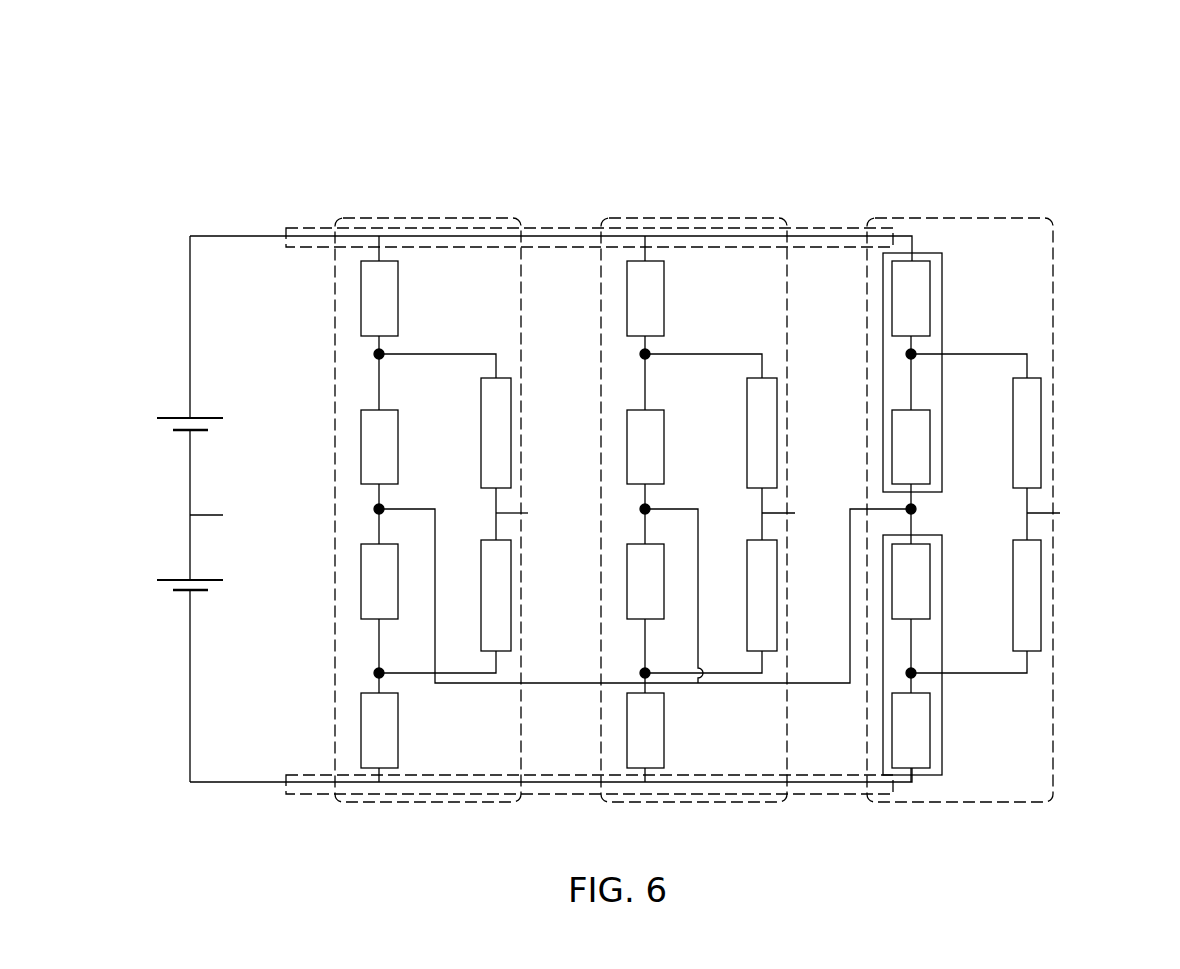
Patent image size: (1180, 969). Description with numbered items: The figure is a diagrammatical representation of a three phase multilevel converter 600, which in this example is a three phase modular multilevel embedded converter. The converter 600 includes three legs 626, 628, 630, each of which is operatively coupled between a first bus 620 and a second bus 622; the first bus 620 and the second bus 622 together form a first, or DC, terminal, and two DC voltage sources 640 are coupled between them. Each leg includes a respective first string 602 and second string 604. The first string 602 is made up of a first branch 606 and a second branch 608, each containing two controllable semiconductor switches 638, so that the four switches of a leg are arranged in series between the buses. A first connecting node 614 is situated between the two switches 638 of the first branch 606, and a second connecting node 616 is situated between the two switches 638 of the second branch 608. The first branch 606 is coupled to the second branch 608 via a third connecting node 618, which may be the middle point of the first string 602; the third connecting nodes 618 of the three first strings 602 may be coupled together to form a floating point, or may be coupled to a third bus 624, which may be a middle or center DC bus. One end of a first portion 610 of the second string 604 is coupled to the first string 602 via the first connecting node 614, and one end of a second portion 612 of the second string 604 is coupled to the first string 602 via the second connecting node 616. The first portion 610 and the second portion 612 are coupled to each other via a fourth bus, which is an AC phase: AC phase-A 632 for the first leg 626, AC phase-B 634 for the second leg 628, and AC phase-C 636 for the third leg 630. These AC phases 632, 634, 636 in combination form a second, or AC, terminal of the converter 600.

The three phase multilevel converter 600 is at (1028, 76).
The first string 602 is at (645, 254).
The second string 604 is at (680, 354).
The first branch 606 is at (942, 291).
The second branch 608 is at (942, 735).
The first portion 610 is at (1043, 432).
The second portion 612 is at (1043, 594).
The first connecting node 614 is at (378, 356).
The second connecting node 616 is at (378, 675).
The third connecting node 618 is at (378, 511).
The first bus 620 is at (294, 228).
The second bus 622 is at (293, 795).
The third bus 624 is at (207, 515).
The first leg 626 is at (496, 218).
The second leg 628 is at (761, 218).
The third leg 630 is at (1010, 218).
The AC phase-A 632 is at (513, 518).
The AC phase-B 634 is at (780, 518).
The AC phase-C 636 is at (1045, 520).
The controllable semiconductor switches 638 is at (360, 437).
The DC voltage sources 640 is at (168, 580).